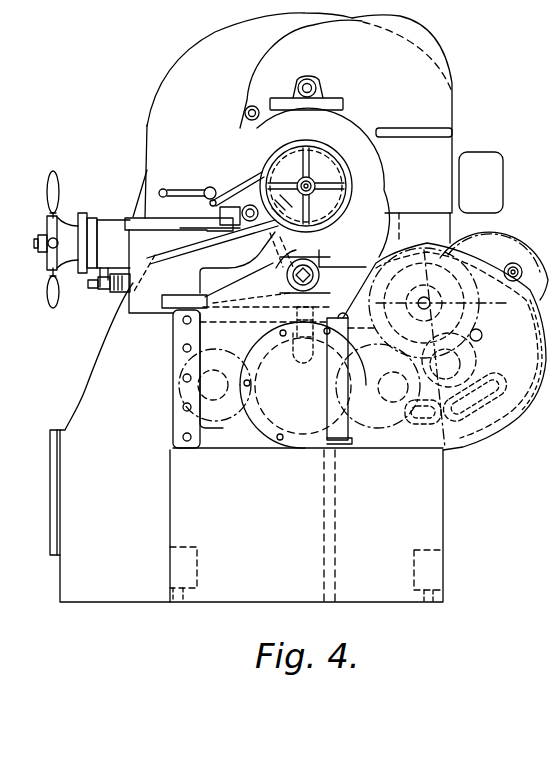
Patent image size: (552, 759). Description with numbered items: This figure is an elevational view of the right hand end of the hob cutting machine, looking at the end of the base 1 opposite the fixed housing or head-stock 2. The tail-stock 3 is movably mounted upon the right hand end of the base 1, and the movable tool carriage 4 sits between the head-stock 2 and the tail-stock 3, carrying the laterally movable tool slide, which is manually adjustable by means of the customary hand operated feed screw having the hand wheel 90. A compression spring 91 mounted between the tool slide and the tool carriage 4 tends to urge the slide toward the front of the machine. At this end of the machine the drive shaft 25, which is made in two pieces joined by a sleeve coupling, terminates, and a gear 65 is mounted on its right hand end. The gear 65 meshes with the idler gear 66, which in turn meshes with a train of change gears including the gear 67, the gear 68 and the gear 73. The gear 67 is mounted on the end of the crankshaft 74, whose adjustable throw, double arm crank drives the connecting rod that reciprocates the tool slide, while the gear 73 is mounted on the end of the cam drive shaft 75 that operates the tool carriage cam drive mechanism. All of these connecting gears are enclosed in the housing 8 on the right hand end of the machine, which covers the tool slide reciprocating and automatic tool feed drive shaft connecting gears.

The base 1 is at (82, 384).
The head-stock 2 is at (438, 103).
The tail-stock 3 is at (353, 210).
The tool carriage 4 is at (211, 242).
The housing 8 is at (359, 346).
The drive shaft 25 is at (217, 402).
The gear 65 is at (237, 420).
The idler gear 66 is at (309, 430).
The change gear 67 is at (405, 410).
The change gear 68 is at (446, 393).
The change gear 73 is at (536, 357).
The crankshaft 74 is at (378, 386).
The cam drive shaft 75 is at (443, 303).
The hand wheel 90 is at (60, 191).
The compression spring 91 is at (112, 292).